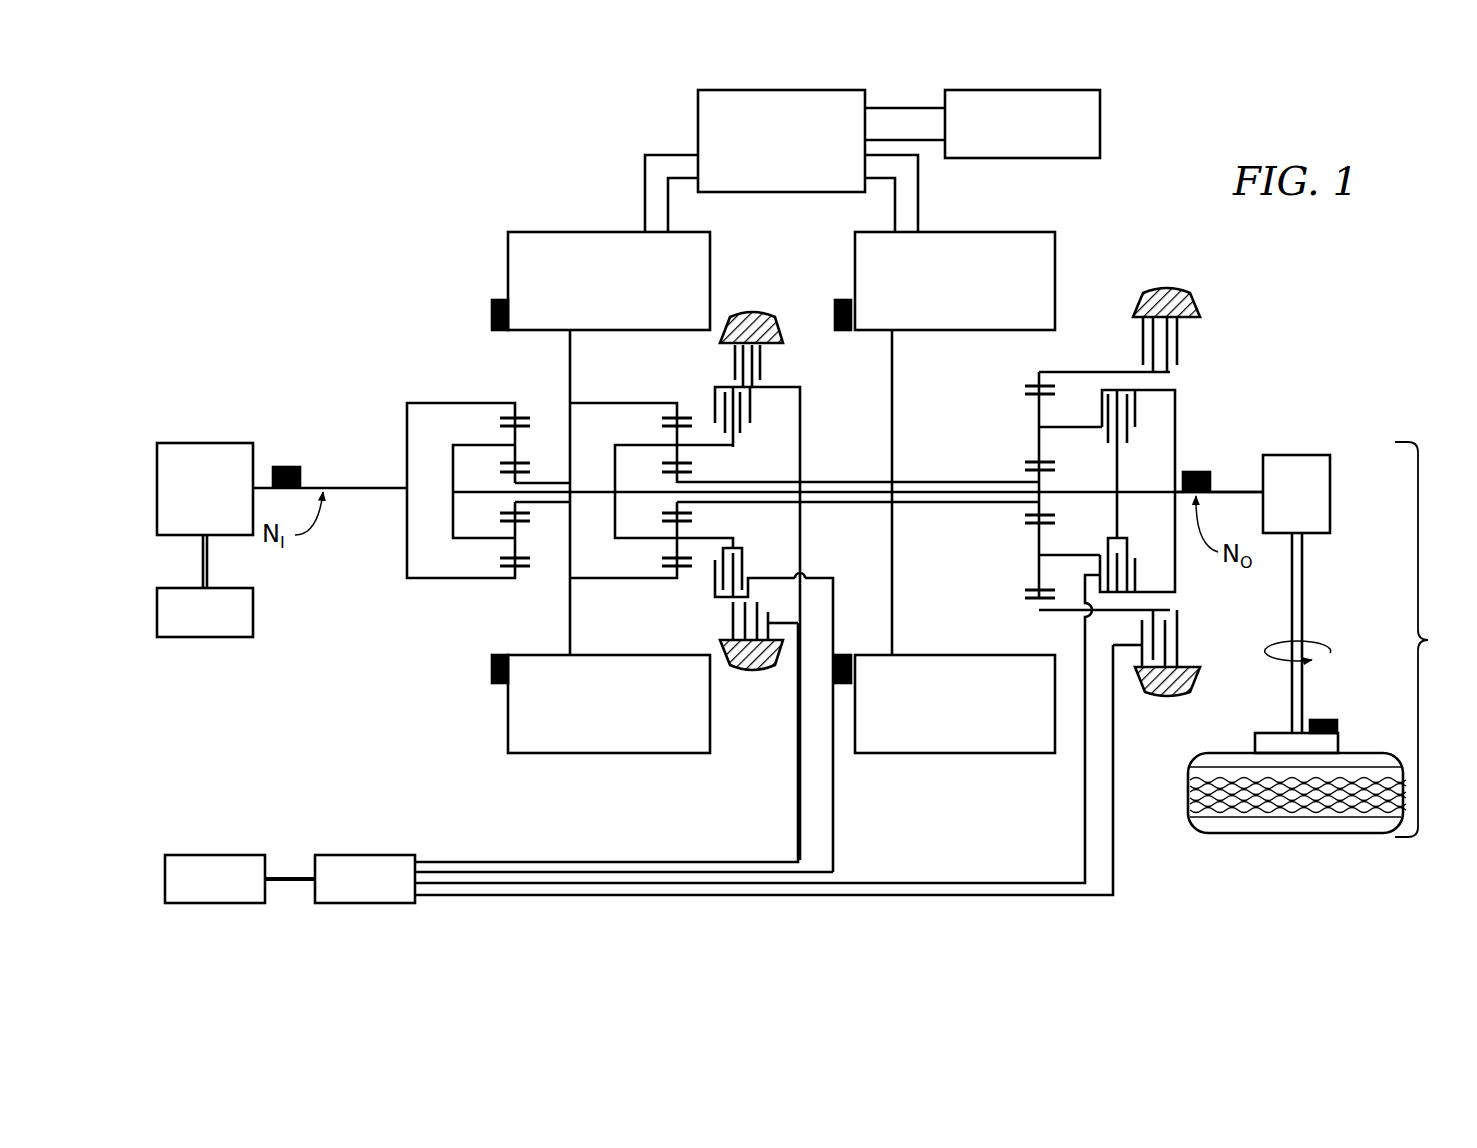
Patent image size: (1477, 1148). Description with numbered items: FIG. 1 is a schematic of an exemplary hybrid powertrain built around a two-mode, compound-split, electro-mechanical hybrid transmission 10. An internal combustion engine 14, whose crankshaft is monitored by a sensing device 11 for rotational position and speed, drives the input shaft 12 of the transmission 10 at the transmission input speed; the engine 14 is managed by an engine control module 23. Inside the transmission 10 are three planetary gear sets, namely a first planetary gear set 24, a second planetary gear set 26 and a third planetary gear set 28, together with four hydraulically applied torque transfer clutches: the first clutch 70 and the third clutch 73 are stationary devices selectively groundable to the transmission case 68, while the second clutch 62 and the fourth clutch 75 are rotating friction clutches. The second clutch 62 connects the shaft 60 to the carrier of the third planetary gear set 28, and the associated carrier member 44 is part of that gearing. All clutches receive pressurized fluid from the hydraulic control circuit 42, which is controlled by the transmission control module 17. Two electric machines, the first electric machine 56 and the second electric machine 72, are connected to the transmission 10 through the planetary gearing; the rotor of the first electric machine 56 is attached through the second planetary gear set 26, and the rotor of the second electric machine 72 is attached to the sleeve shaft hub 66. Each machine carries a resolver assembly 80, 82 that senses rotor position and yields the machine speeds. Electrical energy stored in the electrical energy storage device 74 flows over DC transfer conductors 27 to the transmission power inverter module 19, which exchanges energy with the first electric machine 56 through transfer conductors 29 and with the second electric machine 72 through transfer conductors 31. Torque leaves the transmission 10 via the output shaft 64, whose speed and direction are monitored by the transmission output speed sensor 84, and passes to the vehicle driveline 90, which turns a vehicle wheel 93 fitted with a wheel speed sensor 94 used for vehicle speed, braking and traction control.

The transmission 10 is at (468, 188).
The sensing device 11 is at (285, 466).
The input shaft 12 is at (366, 486).
The engine 14 is at (208, 443).
The transmission control module 17 is at (205, 855).
The transmission power inverter module 19 is at (698, 105).
The engine control module 23 is at (248, 628).
The first planetary gear set 24 is at (512, 398).
The second planetary gear set 26 is at (675, 398).
The DC transfer conductors 27 is at (880, 105).
The third planetary gear set 28 is at (1033, 372).
The transfer conductors 29 is at (645, 190).
The transfer conductors 31 is at (918, 188).
The hydraulic control circuit 42 is at (332, 855).
The carrier member 44 is at (615, 520).
The first electric machine MG-A 56 is at (508, 268).
The shaft 60 is at (1092, 490).
The clutch C2 62 is at (1135, 430).
The output shaft 64 is at (1235, 490).
The sleeve shaft hub 66 is at (928, 480).
The transmission case 68 is at (748, 315).
The clutch C1 70 is at (1133, 338).
The second electric machine MG-B 72 is at (1055, 252).
The clutch C3 73 is at (762, 363).
The electrical energy storage device 74 is at (1100, 112).
The clutch C4 75 is at (748, 422).
The resolver assembly 80 is at (490, 312).
The resolver assembly 82 is at (840, 298).
The transmission output speed sensor 84 is at (1200, 470).
The vehicle driveline 90 is at (1428, 640).
The vehicle wheel 93 is at (1255, 740).
The wheel speed sensor 94 is at (1325, 720).